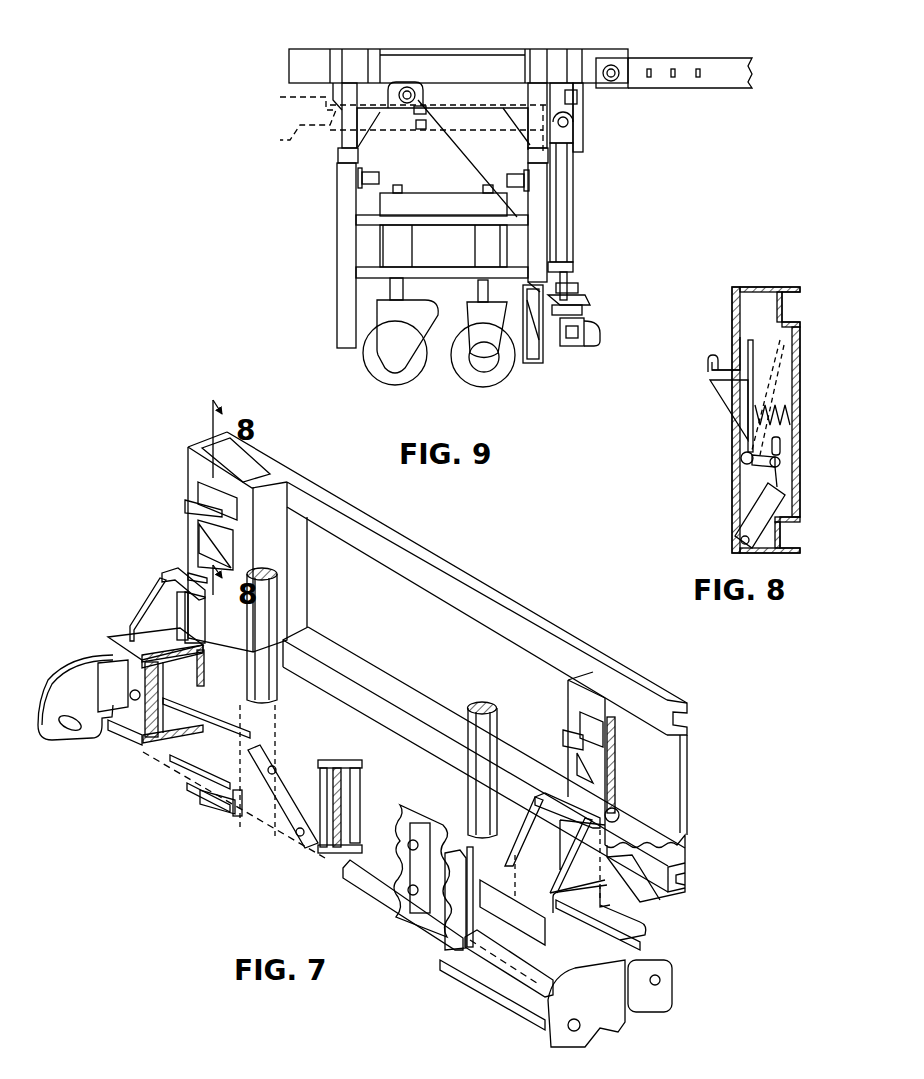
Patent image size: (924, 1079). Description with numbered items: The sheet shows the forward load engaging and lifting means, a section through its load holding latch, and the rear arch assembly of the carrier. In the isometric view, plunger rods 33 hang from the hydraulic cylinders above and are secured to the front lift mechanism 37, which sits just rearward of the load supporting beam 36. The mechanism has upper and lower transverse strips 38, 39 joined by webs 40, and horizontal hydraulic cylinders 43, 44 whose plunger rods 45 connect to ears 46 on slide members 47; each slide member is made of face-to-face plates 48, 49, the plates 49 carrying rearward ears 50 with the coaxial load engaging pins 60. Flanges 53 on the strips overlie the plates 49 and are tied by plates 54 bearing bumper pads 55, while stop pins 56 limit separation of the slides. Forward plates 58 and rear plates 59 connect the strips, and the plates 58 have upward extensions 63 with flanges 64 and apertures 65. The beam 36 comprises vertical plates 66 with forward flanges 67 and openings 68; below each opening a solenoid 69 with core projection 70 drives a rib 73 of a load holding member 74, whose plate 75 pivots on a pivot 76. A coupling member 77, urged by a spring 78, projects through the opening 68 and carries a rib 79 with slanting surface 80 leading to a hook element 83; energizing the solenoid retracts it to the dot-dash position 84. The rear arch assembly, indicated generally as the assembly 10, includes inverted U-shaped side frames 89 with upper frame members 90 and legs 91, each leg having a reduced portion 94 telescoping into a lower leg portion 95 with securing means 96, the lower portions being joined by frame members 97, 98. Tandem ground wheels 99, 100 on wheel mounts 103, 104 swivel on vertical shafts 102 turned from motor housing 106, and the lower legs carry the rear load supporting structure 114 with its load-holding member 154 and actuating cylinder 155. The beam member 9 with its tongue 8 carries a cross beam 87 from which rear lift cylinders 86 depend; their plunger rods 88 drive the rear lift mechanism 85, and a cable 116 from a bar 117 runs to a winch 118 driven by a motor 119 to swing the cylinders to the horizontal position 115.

In FIG. 9, the tongue 8 is at (661, 58).
In FIG. 9, the beam member 9 is at (468, 49).
In FIG. 9, the assembly 10 is at (328, 44).
In FIG. 7, the plunger rods 33 is at (277, 596).
In FIG. 7, the load supporting beam 36 is at (692, 803).
In FIG. 7, the front lift mechanism 37 is at (276, 880).
In FIG. 7, the upper strip 38 is at (155, 640).
In FIG. 7, the lower strip 39 is at (140, 760).
In FIG. 7, the webs 40 is at (203, 777).
In FIG. 7, the hydraulic cylinder 43 is at (215, 722).
In FIG. 7, the hydraulic cylinder 44 is at (522, 968).
In FIG. 7, the plunger rod 45 is at (640, 945).
In FIG. 7, the ear 46 is at (668, 996).
In FIG. 7, the slide members 47 is at (500, 962).
In FIG. 7, the plate 48 is at (170, 705).
In FIG. 7, the plate 49 is at (135, 715).
In FIG. 7, the ears 50 is at (58, 695).
In FIG. 9, the ears 50 is at (584, 346).
In FIG. 7, the flanges 53 is at (115, 652).
In FIG. 7, the plates 54 is at (236, 818).
In FIG. 7, the bumper pads 55 is at (212, 805).
In FIG. 7, the pins 56 is at (298, 835).
In FIG. 7, the forward plates 58 is at (212, 660).
In FIG. 7, the plates 59 is at (192, 680).
In FIG. 7, the load engaging pins 60 is at (66, 738).
In FIG. 9, the load engaging pins 60 is at (598, 340).
In FIG. 7, the upward extensions 63 is at (190, 582).
In FIG. 7, the flanges 64 is at (160, 600).
In FIG. 7, the aperture 65 is at (560, 834).
In FIG. 7, the plates 66 is at (203, 467).
In FIG. 8, the plates 66 is at (732, 492).
In FIG. 7, the flanges 67 is at (207, 441).
In FIG. 8, the flanges 67 is at (758, 297).
In FIG. 7, the openings 68 is at (200, 495).
In FIG. 8, the openings 68 is at (730, 354).
In FIG. 8, the solenoid 69 is at (767, 503).
In FIG. 8, the projection 70 is at (780, 478).
In FIG. 8, the rib 73 is at (770, 437).
In FIG. 7, the load holding member 74 is at (180, 503).
In FIG. 8, the load holding member 74 is at (757, 342).
In FIG. 7, the plate 75 is at (614, 785).
In FIG. 8, the plate 75 is at (745, 400).
In FIG. 8, the pivot 76 is at (741, 460).
In FIG. 7, the coupling member 77 is at (222, 537).
In FIG. 8, the coupling member 77 is at (722, 378).
In FIG. 8, the spring 78 is at (787, 413).
In FIG. 8, the rib 79 is at (728, 396).
In FIG. 7, the slanting surface 80 is at (226, 552).
In FIG. 8, the slanting surface 80 is at (726, 393).
In FIG. 7, the hook element 83 is at (192, 512).
In FIG. 8, the hook element 83 is at (712, 366).
In FIG. 8, the retracted position 84 is at (782, 366).
In FIG. 9, the rear lift mechanism 85 is at (578, 304).
In FIG. 9, the hydraulic cylinders 86 is at (568, 225).
In FIG. 9, the cross beam 87 is at (575, 90).
In FIG. 9, the plunger rods 88 is at (568, 284).
In FIG. 9, the side frames 89 is at (531, 100).
In FIG. 9, the upper frame member 90 is at (472, 98).
In FIG. 9, the legs 91 is at (362, 135).
In FIG. 9, the reduced size portion 94 is at (358, 160).
In FIG. 9, the lower leg portion 95 is at (530, 258).
In FIG. 9, the securing means 96 is at (508, 180).
In FIG. 9, the lower frame member 97 is at (360, 273).
In FIG. 9, the upper frame member 98 is at (360, 221).
In FIG. 9, the rear ground wheel 99 is at (375, 382).
In FIG. 9, the forward ground wheel 100 is at (472, 386).
In FIG. 9, the vertical shafts 102 is at (410, 196).
In FIG. 9, the wheel mount 103 is at (403, 348).
In FIG. 9, the wheel mount 104 is at (497, 362).
In FIG. 9, the motor housing 106 is at (437, 208).
In FIG. 9, the load supporting structure 114 is at (516, 293).
In FIG. 9, the horizontal position 115 is at (308, 133).
In FIG. 9, the cable 116 is at (465, 138).
In FIG. 9, the bar 117 is at (562, 258).
In FIG. 9, the winch 118 is at (404, 84).
In FIG. 9, the motor 119 is at (420, 98).
In FIG. 9, the load-holding member 154 is at (582, 310).
In FIG. 9, the actuating cylinder 155 is at (538, 358).